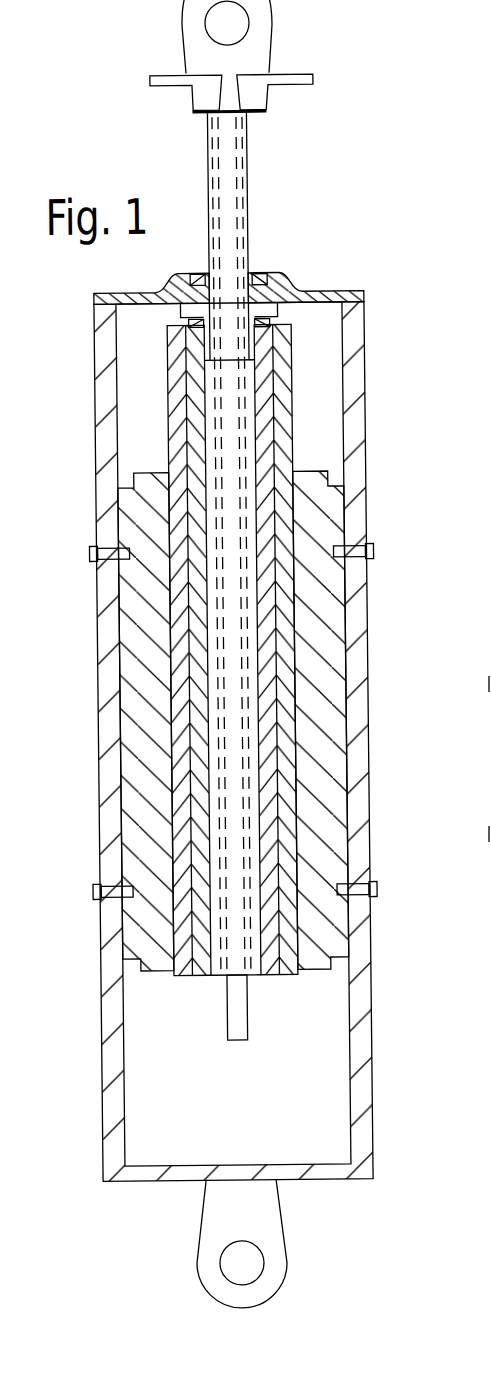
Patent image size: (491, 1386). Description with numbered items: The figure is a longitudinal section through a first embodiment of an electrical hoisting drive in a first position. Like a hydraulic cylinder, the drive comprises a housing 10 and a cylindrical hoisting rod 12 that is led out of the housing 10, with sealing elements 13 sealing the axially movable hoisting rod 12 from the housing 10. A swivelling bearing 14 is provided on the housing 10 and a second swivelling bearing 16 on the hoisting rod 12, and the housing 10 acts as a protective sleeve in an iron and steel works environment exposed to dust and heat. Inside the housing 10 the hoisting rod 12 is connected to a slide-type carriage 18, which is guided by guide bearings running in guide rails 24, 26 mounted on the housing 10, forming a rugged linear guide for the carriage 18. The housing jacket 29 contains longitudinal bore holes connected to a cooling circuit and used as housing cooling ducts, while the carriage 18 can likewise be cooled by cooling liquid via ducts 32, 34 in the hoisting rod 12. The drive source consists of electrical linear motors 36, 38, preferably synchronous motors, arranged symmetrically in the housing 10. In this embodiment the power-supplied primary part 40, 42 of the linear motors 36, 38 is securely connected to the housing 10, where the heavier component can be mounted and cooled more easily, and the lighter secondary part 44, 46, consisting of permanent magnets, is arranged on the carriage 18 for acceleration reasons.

The housing 10 is at (264, 741).
The hoisting rod 12 is at (254, 163).
The sealing elements 13 is at (263, 272).
The swivelling bearing 14 is at (260, 1235).
The swivelling bearing 16 is at (257, 55).
The carriage 18 is at (236, 650).
The guide rail 24 is at (351, 1006).
The guide rail 26 is at (234, 1020).
The housing jacket 29 is at (355, 767).
The duct 32 is at (174, 86).
The duct 34 is at (295, 86).
The electrical linear motor 36 is at (148, 450).
The electrical linear motor 38 is at (310, 450).
The primary part 40 is at (130, 822).
The primary part 42 is at (331, 833).
The secondary part 44 is at (178, 647).
The secondary part 46 is at (294, 684).